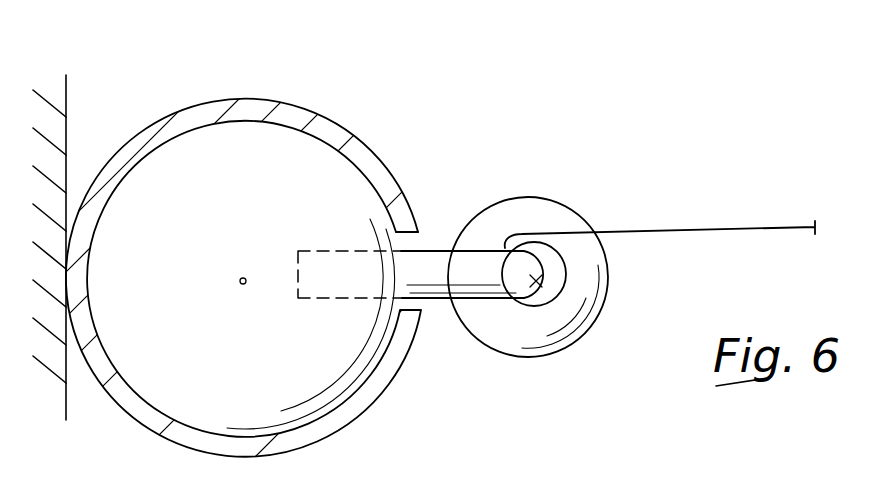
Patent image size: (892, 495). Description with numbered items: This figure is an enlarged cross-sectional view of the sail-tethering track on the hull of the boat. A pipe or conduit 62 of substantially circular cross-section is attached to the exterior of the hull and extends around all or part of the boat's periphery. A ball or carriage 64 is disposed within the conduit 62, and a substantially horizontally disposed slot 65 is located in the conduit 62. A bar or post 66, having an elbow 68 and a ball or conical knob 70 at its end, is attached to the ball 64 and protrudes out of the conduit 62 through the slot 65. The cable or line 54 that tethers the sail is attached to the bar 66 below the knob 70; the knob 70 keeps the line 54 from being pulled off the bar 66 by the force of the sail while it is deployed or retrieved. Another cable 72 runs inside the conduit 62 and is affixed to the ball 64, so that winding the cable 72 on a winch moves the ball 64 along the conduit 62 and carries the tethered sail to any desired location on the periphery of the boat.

The cable or line 54 is at (670, 229).
The pipe or conduit 62 is at (327, 128).
The ball or carriage 64 is at (188, 143).
The slot 65 is at (411, 239).
The bar or post 66 is at (430, 280).
The elbow 68 is at (538, 284).
The ball or conical knob 70 is at (550, 207).
The cable 72 is at (238, 275).